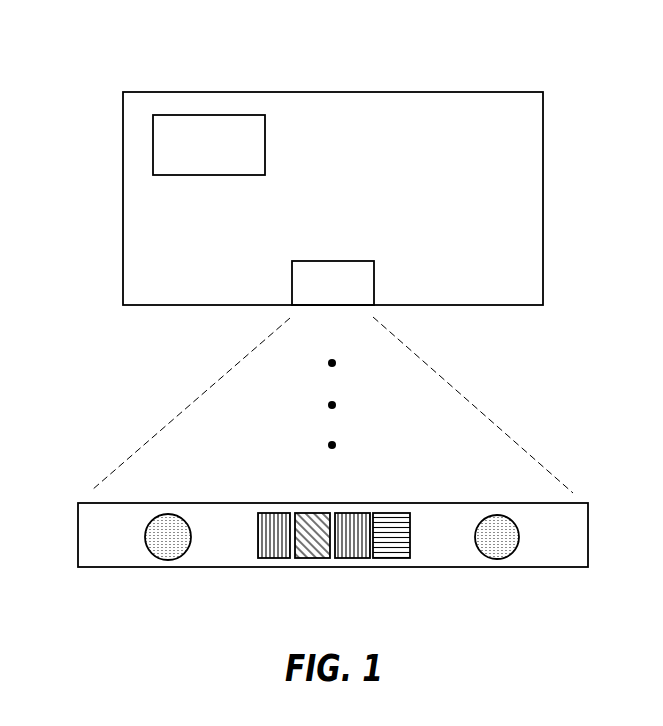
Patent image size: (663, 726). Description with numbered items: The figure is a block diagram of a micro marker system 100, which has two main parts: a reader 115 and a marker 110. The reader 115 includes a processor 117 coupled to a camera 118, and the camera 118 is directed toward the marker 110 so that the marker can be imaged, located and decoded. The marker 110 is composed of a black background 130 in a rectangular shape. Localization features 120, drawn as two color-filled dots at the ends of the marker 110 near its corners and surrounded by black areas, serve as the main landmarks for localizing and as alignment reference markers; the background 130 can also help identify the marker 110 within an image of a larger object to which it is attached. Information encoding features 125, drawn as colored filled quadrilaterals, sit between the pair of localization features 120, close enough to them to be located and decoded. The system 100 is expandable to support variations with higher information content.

The micro marker system 100 is at (90, 49).
The marker 110 is at (536, 568).
The reader 115 is at (335, 92).
The processor 117 is at (267, 145).
The camera 118 is at (333, 261).
The localization features 120 is at (159, 553).
The information encoding features 125 is at (392, 538).
The black background 130 is at (218, 555).